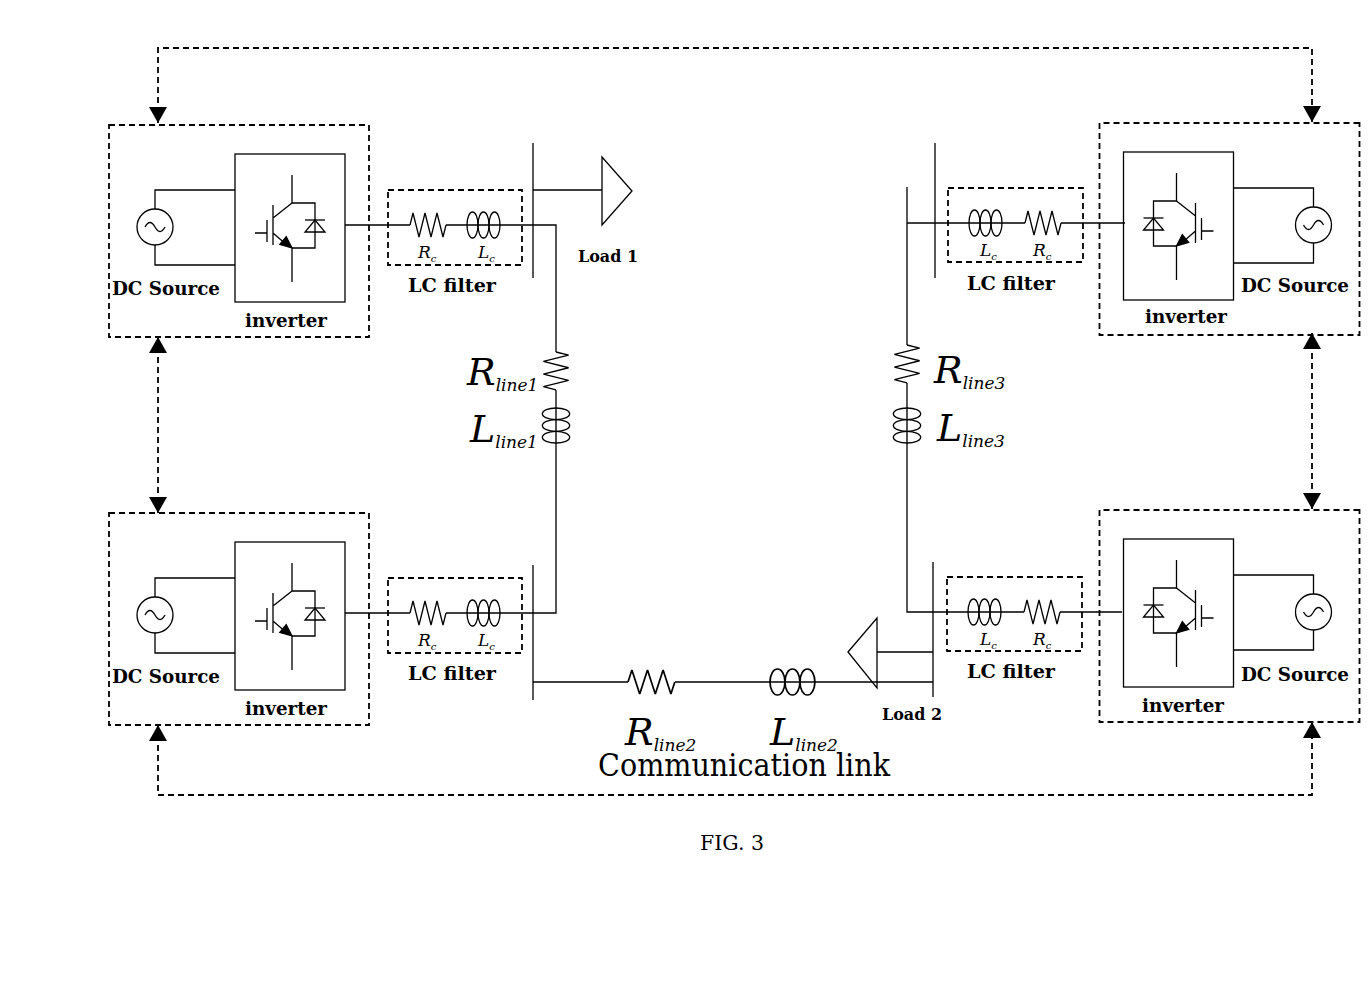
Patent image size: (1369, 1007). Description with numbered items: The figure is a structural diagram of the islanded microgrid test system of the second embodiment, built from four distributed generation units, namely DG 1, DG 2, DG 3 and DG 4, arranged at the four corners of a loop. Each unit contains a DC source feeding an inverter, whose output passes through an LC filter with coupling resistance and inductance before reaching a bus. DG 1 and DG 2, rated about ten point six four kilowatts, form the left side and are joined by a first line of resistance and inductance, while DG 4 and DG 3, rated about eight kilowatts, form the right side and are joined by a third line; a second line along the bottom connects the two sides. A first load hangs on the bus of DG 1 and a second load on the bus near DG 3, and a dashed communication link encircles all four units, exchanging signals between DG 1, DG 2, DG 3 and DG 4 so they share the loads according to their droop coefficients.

The distributed generation unit 1 is at (239, 210).
The distributed generation unit 2 is at (239, 598).
The distributed generation unit 3 is at (1230, 597).
The distributed generation unit 4 is at (1230, 209).